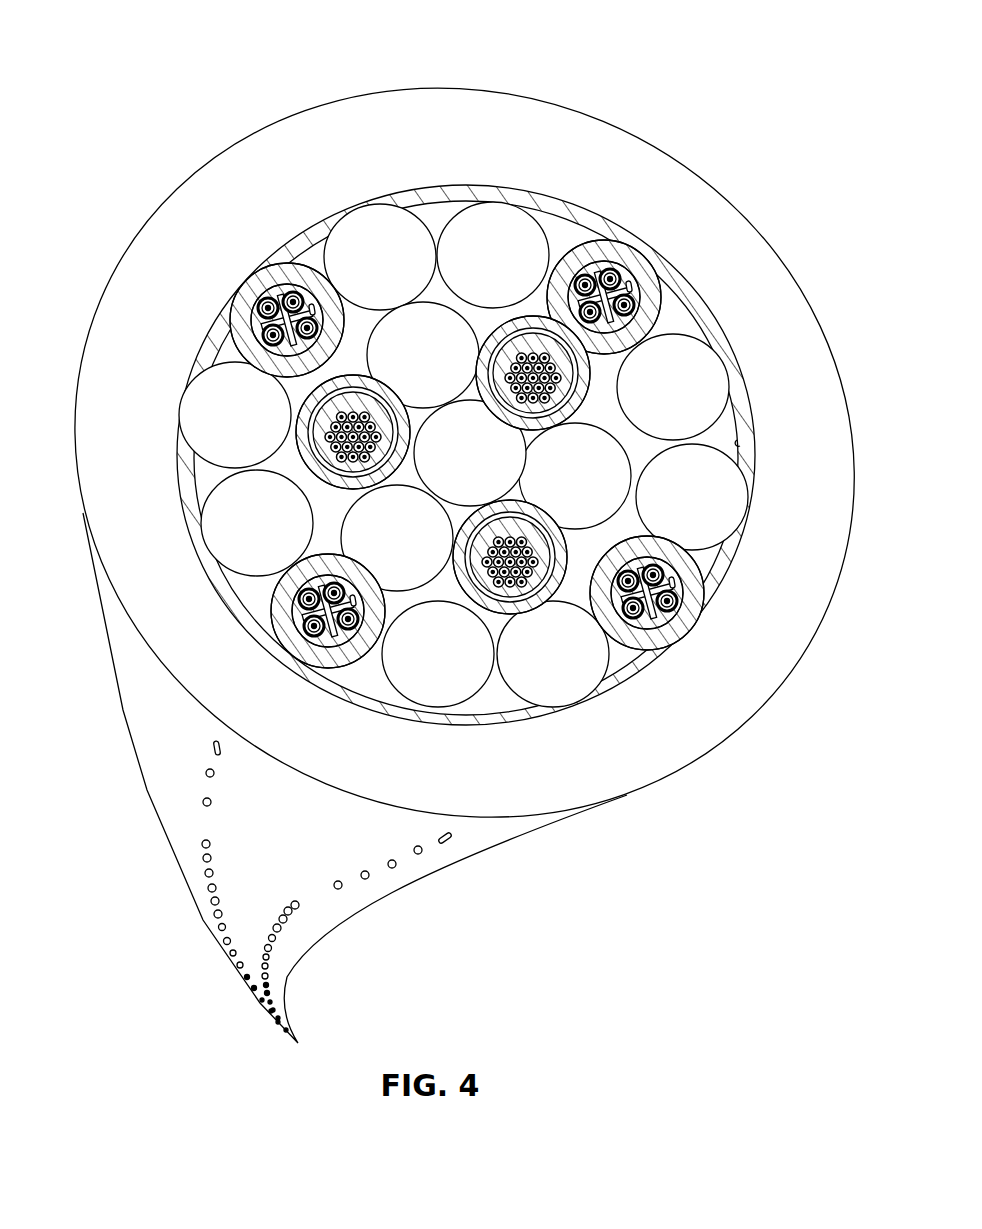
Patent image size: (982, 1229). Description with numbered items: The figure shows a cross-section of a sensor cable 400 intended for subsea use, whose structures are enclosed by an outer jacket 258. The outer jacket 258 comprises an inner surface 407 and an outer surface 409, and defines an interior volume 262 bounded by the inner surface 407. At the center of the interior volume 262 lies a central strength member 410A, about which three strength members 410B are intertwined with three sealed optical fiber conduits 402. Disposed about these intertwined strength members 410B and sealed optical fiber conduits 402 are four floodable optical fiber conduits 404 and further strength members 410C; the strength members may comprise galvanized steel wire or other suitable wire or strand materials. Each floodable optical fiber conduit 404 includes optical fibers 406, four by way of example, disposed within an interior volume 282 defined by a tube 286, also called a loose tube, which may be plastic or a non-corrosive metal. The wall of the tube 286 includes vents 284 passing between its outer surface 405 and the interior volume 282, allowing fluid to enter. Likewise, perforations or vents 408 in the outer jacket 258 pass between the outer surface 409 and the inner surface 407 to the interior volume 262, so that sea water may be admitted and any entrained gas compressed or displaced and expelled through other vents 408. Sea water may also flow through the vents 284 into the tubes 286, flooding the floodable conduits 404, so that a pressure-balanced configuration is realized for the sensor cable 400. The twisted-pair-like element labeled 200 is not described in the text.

The sensor cable 400 is at (138, 50).
The outer jacket 258 is at (453, 90).
The interior volume 262 is at (704, 337).
The twisted pair cable 200 is at (619, 257).
The interior volume 282 is at (277, 293).
The vents 284 is at (311, 306).
The tube 286 is at (243, 302).
The sealed optical fiber conduit 402 is at (563, 362).
The floodable optical fiber conduit 404 is at (571, 237).
The outer surface 405 is at (292, 392).
The optical fibers 406 is at (306, 648).
The inner surface 407 is at (744, 434).
The vents 408 is at (212, 748).
The outer surface 409 is at (507, 830).
The central strength member 410A is at (438, 469).
The strength members 410B is at (391, 371).
The strength members 410C is at (348, 273).